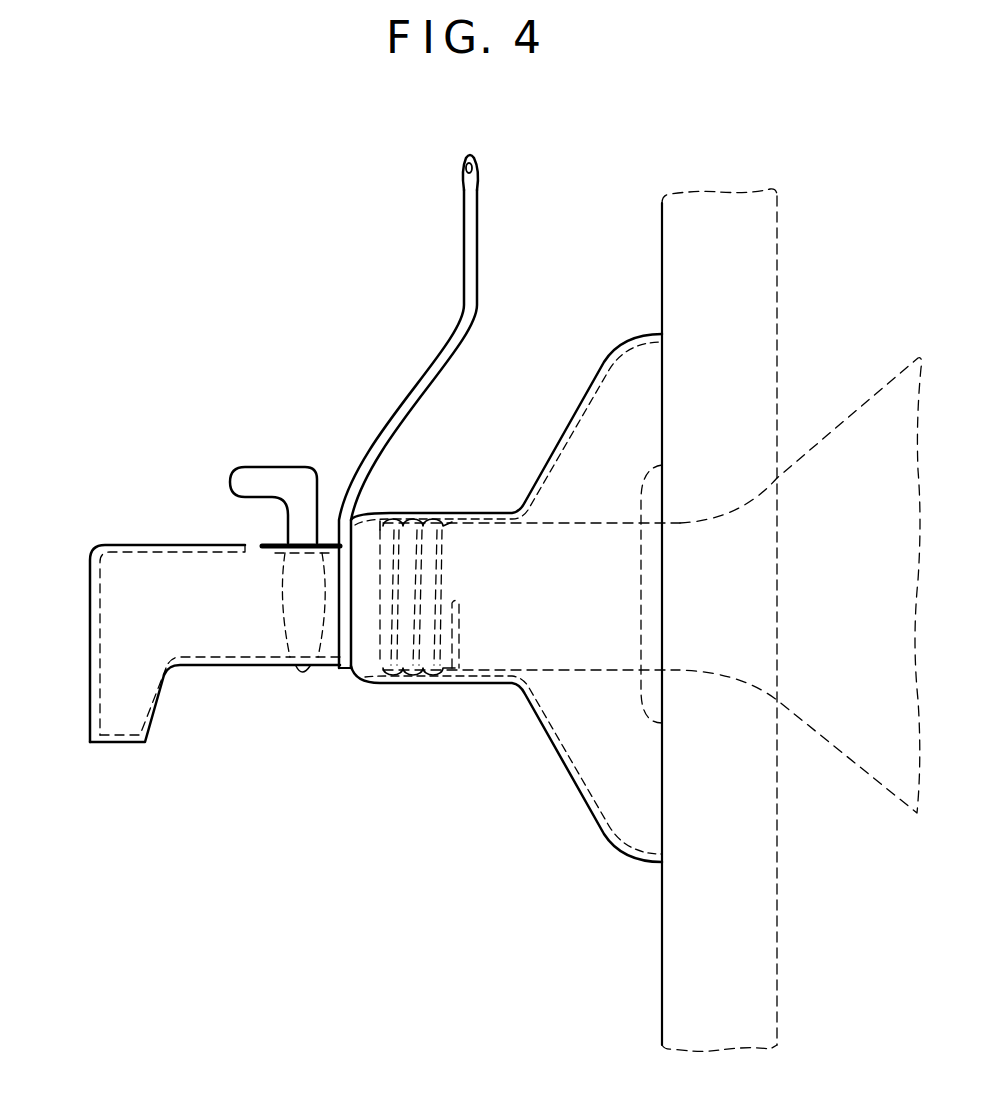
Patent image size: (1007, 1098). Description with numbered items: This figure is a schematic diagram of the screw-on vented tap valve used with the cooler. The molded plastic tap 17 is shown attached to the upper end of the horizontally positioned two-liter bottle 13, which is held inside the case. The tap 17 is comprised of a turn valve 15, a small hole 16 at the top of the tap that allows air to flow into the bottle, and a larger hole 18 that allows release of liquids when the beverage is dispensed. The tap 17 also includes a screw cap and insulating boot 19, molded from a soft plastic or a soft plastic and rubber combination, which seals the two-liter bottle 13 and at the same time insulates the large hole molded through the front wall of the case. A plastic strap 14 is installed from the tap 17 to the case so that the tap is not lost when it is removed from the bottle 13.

The 2 liter bottle 13 is at (858, 618).
The plastic strap 14 is at (473, 227).
The turn valve 15 is at (277, 468).
The small hole 16 is at (258, 543).
The molded plastic tap 17 is at (115, 616).
The larger hole 18 is at (118, 746).
The screw cap and insulating boot 19 is at (590, 750).